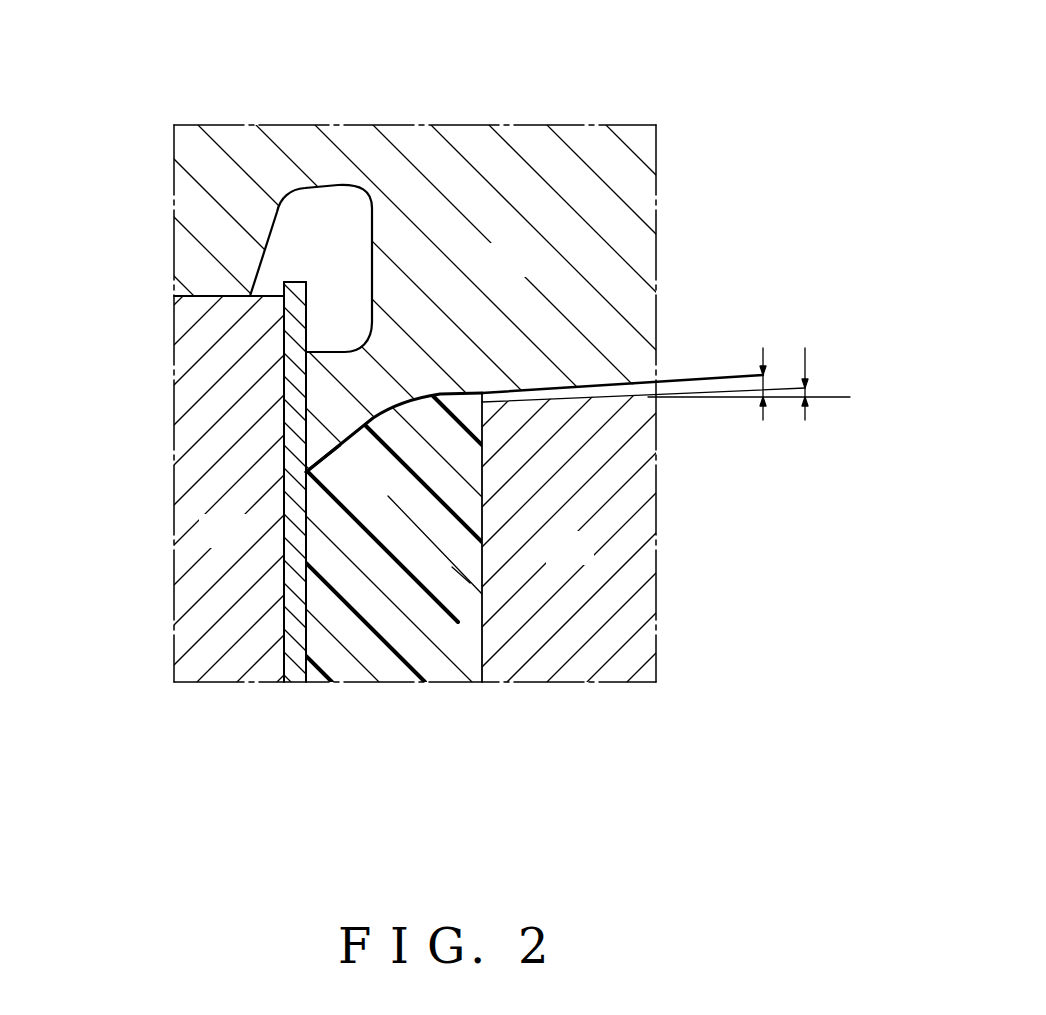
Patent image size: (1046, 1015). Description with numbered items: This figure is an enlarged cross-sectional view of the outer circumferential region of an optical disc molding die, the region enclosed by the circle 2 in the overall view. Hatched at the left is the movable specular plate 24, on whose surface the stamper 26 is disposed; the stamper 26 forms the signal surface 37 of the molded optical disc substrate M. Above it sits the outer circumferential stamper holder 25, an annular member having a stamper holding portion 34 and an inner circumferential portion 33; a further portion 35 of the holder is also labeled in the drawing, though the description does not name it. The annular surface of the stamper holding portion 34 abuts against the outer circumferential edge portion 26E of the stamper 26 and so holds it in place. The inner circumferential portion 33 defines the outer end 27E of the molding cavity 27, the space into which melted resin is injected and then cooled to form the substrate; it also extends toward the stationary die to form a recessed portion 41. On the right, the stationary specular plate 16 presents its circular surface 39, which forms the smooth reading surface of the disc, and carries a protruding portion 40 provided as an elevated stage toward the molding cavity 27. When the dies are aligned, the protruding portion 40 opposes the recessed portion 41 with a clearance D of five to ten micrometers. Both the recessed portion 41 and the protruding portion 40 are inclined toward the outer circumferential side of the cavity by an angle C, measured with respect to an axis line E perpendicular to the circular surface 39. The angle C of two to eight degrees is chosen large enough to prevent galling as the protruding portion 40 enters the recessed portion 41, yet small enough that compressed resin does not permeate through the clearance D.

The circle 2 is at (598, 110).
The stationary specular plate 16 is at (549, 559).
The movable specular plate 24 is at (245, 543).
The outer circumferential stamper holder 25 is at (489, 273).
The stamper 26 is at (293, 662).
The outer circumferential edge portion 26E is at (300, 316).
The molding cavity 27 is at (444, 665).
The outer end of the molding cavity 27E is at (378, 404).
The inner circumferential portion 33 is at (362, 443).
The stamper holding portion 34 is at (307, 418).
The pin corner portion 35 is at (320, 447).
The signal surface 37 is at (304, 590).
The circular surface 39 is at (452, 572).
The protruding portion 40 is at (590, 387).
The recessed portion 41 is at (594, 393).
The clearance D is at (767, 382).
The angle C is at (809, 390).
The axis line E is at (761, 397).